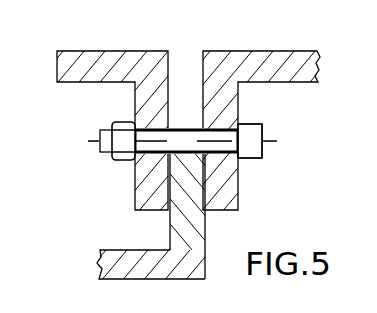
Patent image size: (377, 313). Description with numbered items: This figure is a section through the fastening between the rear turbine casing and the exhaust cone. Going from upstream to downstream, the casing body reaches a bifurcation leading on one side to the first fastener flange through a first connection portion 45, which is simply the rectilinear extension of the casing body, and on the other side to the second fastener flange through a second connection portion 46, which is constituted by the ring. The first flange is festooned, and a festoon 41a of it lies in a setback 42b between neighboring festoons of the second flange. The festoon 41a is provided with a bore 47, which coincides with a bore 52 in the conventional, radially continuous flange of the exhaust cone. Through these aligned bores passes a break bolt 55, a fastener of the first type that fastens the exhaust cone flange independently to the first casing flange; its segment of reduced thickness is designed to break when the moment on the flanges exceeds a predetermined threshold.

The first connection portion 45 is at (70, 72).
The second connection portion 46 is at (106, 262).
The festoon of the first flange 41a is at (153, 197).
The setback 42b is at (183, 158).
The bore 47 is at (147, 129).
The bore 52 is at (222, 158).
The break bolt 55 is at (250, 125).